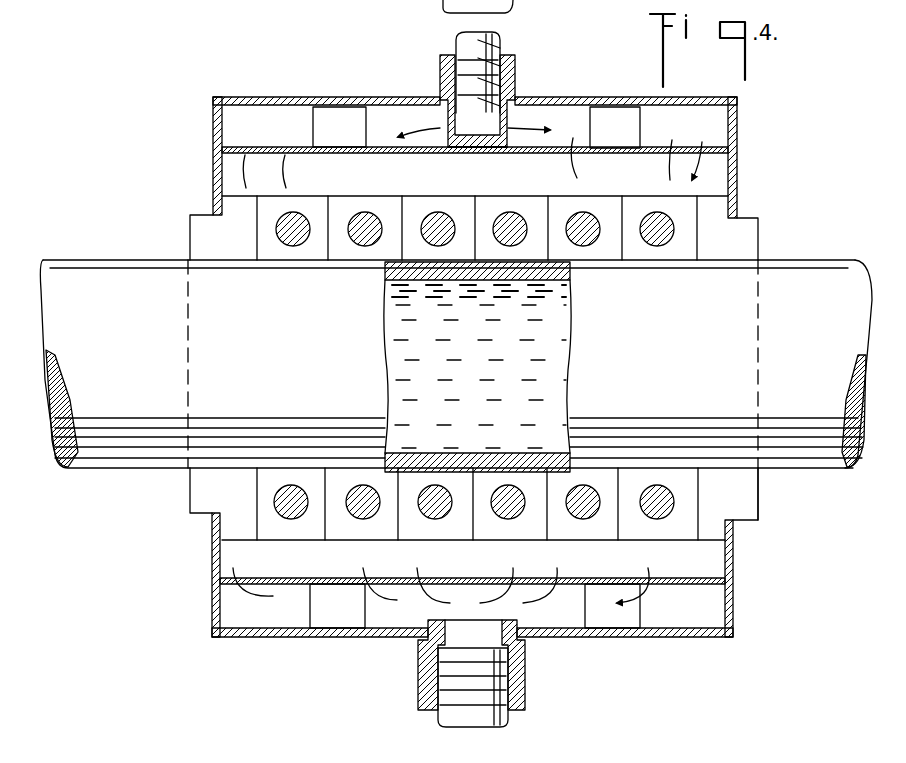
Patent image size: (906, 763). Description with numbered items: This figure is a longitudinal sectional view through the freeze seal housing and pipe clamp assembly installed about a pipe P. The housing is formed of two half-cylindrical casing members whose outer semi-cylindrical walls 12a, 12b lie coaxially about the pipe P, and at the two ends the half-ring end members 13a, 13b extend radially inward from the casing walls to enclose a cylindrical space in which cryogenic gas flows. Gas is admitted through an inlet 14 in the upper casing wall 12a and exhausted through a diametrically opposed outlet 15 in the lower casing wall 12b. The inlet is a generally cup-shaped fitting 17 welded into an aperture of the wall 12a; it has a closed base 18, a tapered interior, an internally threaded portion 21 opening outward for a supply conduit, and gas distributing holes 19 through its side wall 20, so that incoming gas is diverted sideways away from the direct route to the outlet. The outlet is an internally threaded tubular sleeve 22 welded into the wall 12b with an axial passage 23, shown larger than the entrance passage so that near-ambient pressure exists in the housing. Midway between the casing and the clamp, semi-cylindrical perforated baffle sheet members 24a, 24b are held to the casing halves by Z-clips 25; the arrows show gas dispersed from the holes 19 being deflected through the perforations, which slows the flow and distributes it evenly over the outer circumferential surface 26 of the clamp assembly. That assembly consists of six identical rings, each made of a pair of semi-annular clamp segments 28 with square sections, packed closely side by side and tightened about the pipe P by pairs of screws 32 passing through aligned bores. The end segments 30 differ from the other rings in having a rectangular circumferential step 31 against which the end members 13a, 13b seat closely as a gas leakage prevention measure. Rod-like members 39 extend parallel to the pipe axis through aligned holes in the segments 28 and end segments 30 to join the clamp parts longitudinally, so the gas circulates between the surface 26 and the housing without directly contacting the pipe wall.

The pipe P is at (88, 262).
The outer semi-cylindrical casing wall 12a is at (481, 140).
The outer semi-cylindrical casing wall 12b is at (478, 599).
The housing end member 13a is at (213, 141).
The housing end member 13b is at (212, 566).
The inlet 14 is at (466, 73).
The outlet 15 is at (464, 673).
The cup-shaped fitting 17 is at (515, 63).
The closed base 18 is at (458, 153).
The gas distributing holes 19 is at (508, 123).
The side wall 20 is at (445, 117).
The internally threaded portion 21 is at (455, 55).
The internally threaded tubular sleeve 22 is at (426, 690).
The axial passage 23 is at (510, 684).
The perforated sheet member 24a is at (692, 150).
The perforated sheet member 24b is at (512, 578).
The Z-clips 25 is at (313, 122).
The outer circumferential surface of pipe clamp assembly 26 is at (545, 192).
The semi-annular clamp segments 28 is at (298, 262).
The end segments 30 is at (200, 234).
The rectangular circumferential step 31 is at (205, 212).
The screws 32 is at (360, 248).
The rod-like members 39 is at (752, 500).